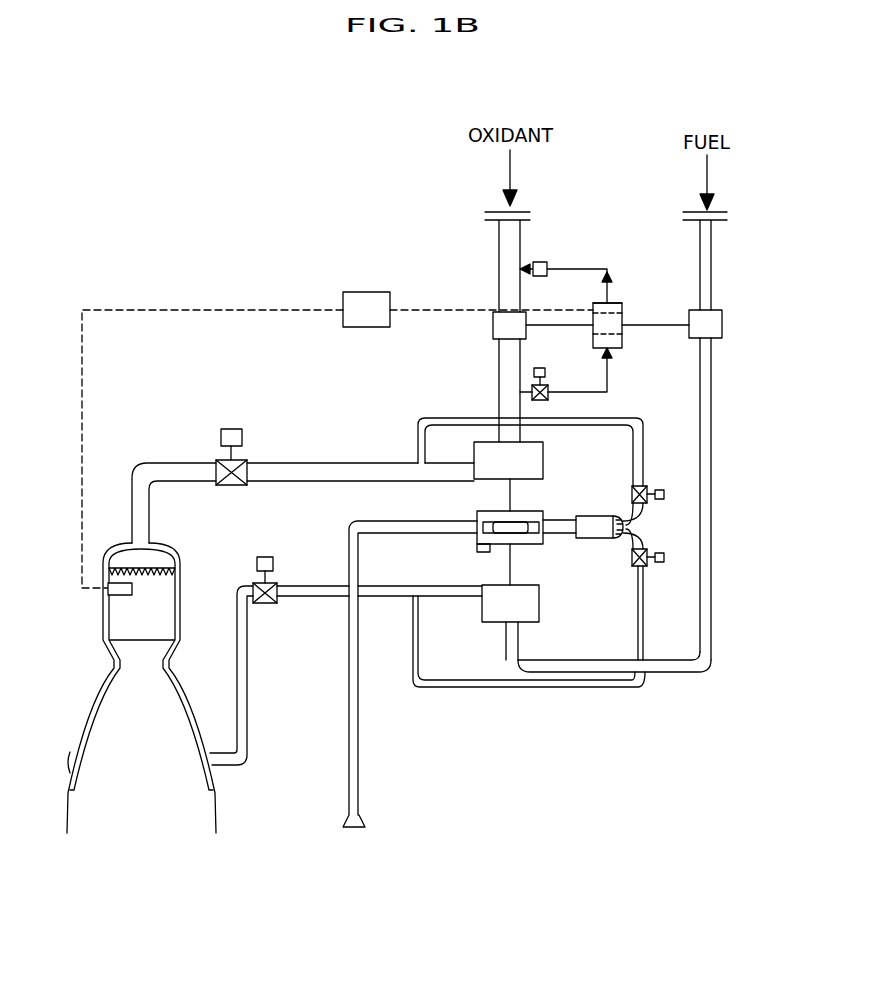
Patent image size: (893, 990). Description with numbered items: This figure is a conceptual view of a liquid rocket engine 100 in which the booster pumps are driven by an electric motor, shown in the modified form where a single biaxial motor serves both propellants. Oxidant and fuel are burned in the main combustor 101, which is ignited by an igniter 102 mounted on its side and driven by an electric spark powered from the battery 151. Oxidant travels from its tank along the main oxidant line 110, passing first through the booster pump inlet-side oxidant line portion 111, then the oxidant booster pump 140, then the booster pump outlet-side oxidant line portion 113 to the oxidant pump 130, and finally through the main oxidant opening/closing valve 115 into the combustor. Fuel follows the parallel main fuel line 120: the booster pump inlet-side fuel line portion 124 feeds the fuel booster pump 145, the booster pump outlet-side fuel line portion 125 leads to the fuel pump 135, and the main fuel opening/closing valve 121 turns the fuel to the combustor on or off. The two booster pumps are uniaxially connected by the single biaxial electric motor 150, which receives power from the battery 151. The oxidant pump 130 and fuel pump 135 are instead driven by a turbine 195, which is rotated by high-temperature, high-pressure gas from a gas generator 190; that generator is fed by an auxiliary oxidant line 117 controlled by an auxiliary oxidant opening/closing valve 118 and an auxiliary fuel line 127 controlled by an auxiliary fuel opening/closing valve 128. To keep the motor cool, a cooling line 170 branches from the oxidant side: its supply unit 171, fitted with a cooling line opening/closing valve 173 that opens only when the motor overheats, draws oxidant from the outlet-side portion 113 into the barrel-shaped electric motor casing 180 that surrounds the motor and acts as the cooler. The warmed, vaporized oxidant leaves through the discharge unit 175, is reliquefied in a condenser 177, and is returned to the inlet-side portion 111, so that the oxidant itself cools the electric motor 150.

The liquid rocket engine 100 is at (340, 121).
The main combustor 101 is at (88, 728).
The igniter 102 is at (108, 596).
The main oxidant line 110 is at (320, 455).
The booster pump inlet-side oxidant line portion 111 is at (499, 268).
The booster pump outlet-side oxidant line portion 113 is at (499, 361).
The main oxidant opening/closing valve 115 is at (228, 487).
The auxiliary oxidant line 117 is at (645, 455).
The auxiliary oxidant opening/closing valve 118 is at (665, 494).
The main fuel line 120 is at (672, 680).
The main fuel opening/closing valve 121 is at (265, 605).
The booster pump inlet-side fuel line portion 124 is at (712, 252).
The booster pump outlet-side fuel line portion 125 is at (712, 412).
The auxiliary fuel line 127 is at (712, 612).
The auxiliary fuel opening/closing valve 128 is at (665, 557).
The oxidant pump 130 is at (543, 458).
The fuel pump 135 is at (539, 608).
The oxidant booster pump 140 is at (493, 326).
The fuel booster pump 145 is at (722, 325).
The electric motor 150 is at (622, 338).
The battery 151 is at (361, 291).
The cooling line 170 is at (563, 290).
The supply unit 171 is at (609, 384).
The cooling line opening/closing valve 173 is at (532, 392).
The discharge unit 175 is at (580, 268).
The condenser 177 is at (538, 262).
The electric motor casing 180 is at (622, 308).
The gas generator 190 is at (593, 538).
The turbine 195 is at (510, 530).